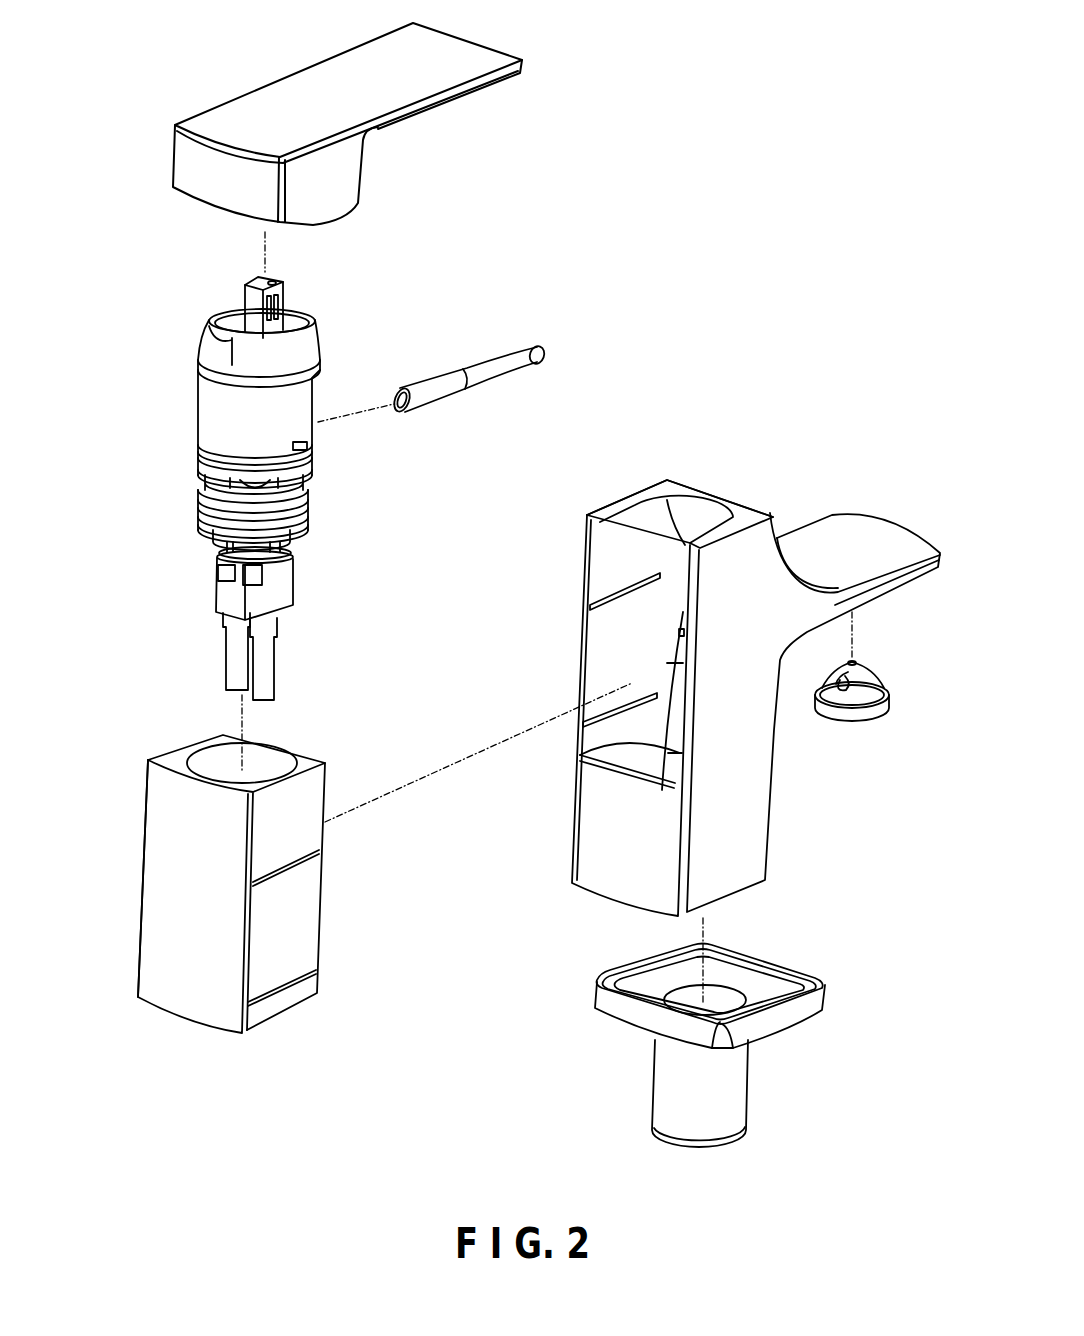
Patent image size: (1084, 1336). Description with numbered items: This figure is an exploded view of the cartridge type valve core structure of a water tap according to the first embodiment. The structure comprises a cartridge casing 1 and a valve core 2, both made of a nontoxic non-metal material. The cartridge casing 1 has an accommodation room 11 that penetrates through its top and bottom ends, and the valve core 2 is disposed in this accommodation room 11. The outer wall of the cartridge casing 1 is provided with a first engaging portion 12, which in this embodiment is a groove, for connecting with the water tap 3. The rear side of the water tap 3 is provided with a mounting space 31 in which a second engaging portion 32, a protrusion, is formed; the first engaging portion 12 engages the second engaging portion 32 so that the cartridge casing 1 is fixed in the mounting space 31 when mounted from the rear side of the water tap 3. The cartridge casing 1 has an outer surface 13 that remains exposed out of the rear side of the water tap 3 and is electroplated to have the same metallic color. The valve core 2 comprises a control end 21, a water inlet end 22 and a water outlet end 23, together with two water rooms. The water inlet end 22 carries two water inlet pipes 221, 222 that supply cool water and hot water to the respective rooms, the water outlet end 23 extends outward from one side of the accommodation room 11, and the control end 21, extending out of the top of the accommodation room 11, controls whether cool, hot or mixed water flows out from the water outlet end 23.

The cartridge casing 1 is at (237, 876).
The accommodation room 11 is at (207, 757).
The first engaging portion 12 is at (320, 853).
The outer surface 13 is at (158, 887).
The valve core 2 is at (207, 397).
The control end 21 is at (250, 297).
The water inlet end 22 is at (184, 623).
The water inlet pipe 221 is at (238, 650).
The water inlet pipe 222 is at (258, 677).
The water outlet end 23 is at (444, 378).
The water tap 3 is at (713, 670).
The mounting space 31 is at (627, 515).
The second engaging portion 32 is at (590, 603).